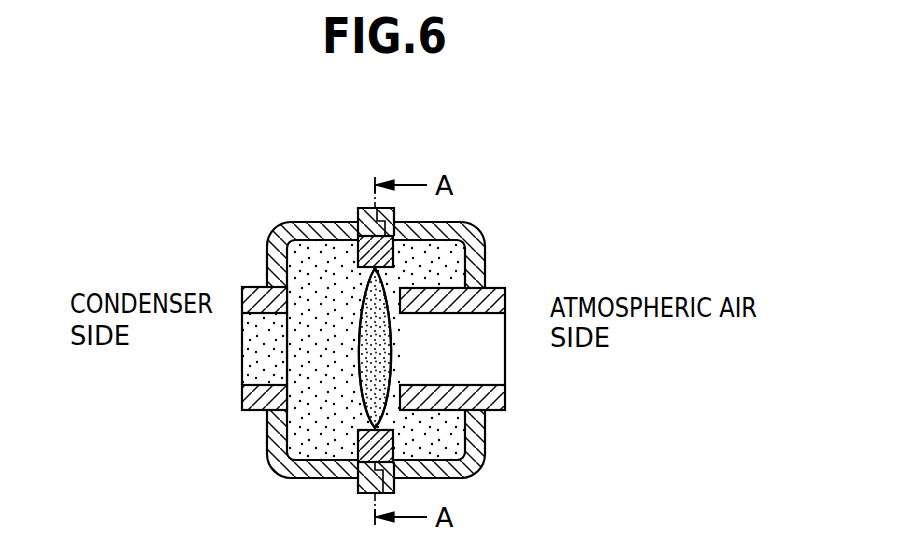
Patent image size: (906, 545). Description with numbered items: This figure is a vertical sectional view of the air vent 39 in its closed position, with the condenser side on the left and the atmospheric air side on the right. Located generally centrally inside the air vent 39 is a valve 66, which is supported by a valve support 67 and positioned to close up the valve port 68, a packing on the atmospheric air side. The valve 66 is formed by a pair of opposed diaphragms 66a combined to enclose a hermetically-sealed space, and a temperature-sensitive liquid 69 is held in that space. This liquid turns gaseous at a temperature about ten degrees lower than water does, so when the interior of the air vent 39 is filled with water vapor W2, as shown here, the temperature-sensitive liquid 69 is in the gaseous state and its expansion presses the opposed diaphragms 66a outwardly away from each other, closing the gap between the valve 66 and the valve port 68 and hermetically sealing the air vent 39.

The air vent 39 is at (423, 310).
The valve 66 is at (358, 310).
The diaphragms 66a is at (398, 349).
The valve support 67 is at (393, 256).
The valve port 68 is at (390, 395).
The temperature-sensitive liquid 69 is at (391, 283).
The water vapor W2 is at (450, 276).